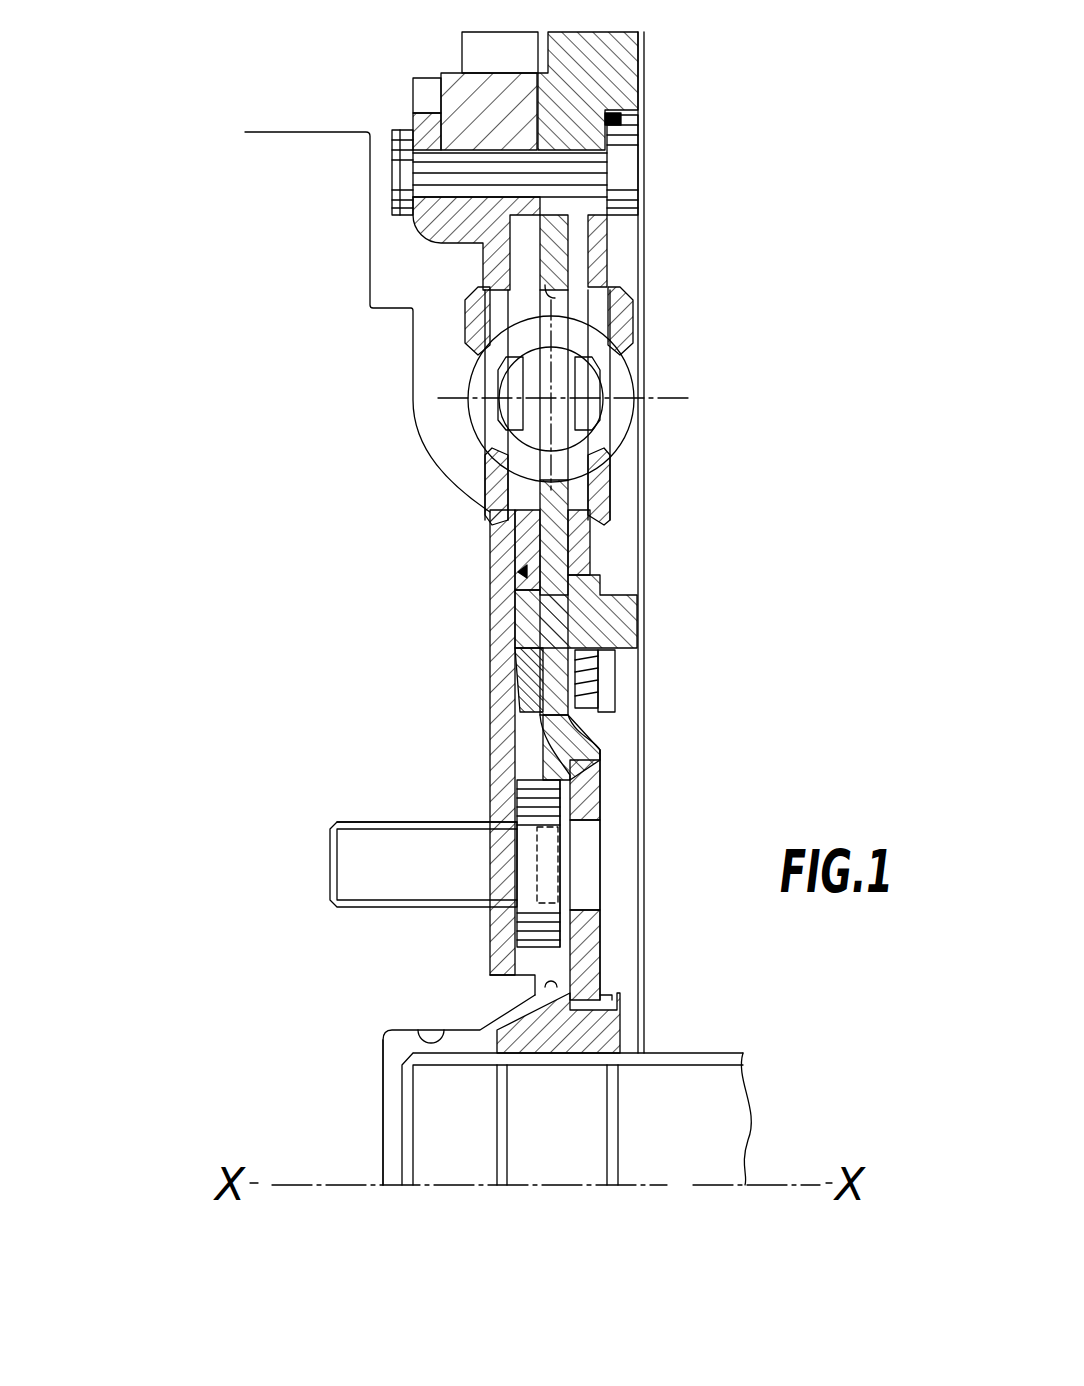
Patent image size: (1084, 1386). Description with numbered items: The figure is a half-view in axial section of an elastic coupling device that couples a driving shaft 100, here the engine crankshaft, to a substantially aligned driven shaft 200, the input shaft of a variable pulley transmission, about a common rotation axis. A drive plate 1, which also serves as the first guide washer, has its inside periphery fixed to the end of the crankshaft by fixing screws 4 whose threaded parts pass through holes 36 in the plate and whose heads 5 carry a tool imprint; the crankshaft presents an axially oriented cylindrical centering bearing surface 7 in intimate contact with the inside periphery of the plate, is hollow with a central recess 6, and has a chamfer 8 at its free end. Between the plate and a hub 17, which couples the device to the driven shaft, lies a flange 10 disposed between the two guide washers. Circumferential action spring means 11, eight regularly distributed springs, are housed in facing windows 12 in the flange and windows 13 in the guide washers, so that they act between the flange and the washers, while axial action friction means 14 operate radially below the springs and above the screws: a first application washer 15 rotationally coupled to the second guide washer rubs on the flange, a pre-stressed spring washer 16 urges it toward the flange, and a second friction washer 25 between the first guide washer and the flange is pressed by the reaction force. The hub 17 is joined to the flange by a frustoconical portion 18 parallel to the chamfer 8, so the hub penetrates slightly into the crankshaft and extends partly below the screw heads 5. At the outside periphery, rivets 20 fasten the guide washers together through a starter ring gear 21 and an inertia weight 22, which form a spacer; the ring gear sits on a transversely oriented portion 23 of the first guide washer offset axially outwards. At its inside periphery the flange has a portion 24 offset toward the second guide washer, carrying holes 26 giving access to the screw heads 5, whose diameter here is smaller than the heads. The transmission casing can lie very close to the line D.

The drive plate (first guide washer) 1 is at (490, 722).
The fixing screws 4 is at (327, 875).
The heads of the fixing screws 5 is at (560, 795).
The recess 6 is at (450, 1030).
The centering bearing surface 7 is at (523, 900).
The chamfer 8 is at (545, 987).
The flange 10 is at (575, 510).
The circumferential action spring means 11 is at (617, 390).
The windows in the flange 12 is at (552, 300).
The windows in the guide washers 13 is at (490, 455).
The axial action friction means 14 is at (518, 568).
The first application washer 15 is at (600, 580).
The axial action spring washer 16 is at (610, 673).
The hub 17 is at (600, 1047).
The frustoconical portion 18 is at (557, 997).
The rivets 20 is at (395, 182).
The starter ring gear 21 is at (415, 97).
The inertia weight 22 is at (645, 73).
The transversely oriented portion 23 is at (430, 237).
The inside portion of the flange 24 is at (600, 937).
The second friction washer 25 is at (530, 667).
The holes 26 is at (600, 838).
The holes 36 is at (427, 792).
The driving shaft 100 is at (330, 957).
The driven shaft 200 is at (481, 1127).
The line D is at (630, 345).